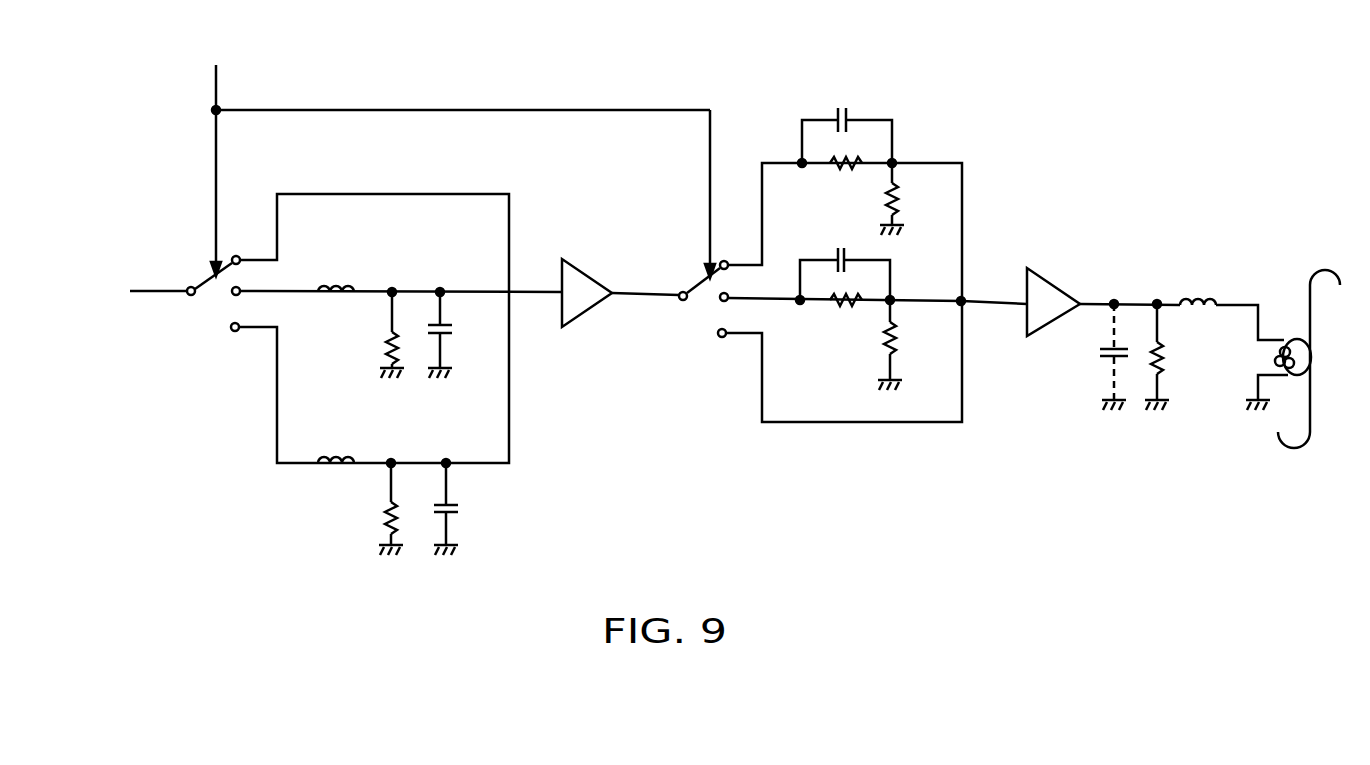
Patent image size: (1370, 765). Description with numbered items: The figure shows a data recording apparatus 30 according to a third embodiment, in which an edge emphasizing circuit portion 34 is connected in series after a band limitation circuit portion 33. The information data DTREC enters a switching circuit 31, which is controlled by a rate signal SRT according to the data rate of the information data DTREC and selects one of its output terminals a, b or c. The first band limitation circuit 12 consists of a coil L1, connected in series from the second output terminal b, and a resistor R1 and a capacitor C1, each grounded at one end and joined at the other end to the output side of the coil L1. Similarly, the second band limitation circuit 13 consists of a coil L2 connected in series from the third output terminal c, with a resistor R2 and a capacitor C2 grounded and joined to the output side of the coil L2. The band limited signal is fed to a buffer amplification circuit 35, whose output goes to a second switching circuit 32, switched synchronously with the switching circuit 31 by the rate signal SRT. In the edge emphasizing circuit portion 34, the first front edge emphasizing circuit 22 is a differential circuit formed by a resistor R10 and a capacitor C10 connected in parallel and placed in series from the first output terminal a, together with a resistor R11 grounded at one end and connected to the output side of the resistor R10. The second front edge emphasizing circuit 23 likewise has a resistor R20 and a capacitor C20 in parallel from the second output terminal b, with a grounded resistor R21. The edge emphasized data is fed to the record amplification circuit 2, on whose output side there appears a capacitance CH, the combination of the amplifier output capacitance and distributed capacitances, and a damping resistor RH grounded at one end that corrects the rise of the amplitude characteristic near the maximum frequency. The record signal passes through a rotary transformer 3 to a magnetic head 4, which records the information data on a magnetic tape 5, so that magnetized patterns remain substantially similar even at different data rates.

The record amplification circuit 2 is at (1048, 290).
The rotary transformer 3 is at (1200, 300).
The magnetic head 4 is at (1275, 357).
The magnetic tape 5 is at (1312, 312).
The first band limitation circuit 12 is at (378, 328).
The second band limitation circuit 13 is at (419, 510).
The first front edge emphasizing circuit 22 is at (844, 166).
The second front edge emphasizing circuit 23 is at (871, 327).
The data recording apparatus 30 is at (962, 70).
The switching circuit 31 is at (207, 326).
The switching circuit 32 is at (695, 328).
The band limitation circuit portion 33 is at (386, 399).
The edge emphasizing circuit portion 34 is at (844, 291).
The buffer amplification circuit 35 is at (573, 257).
The rate signal SRT is at (218, 108).
The information data DTREC is at (163, 290).
The coil L1 is at (342, 284).
The resistor R1 is at (387, 342).
The capacitor C1 is at (435, 358).
The coil L2 is at (348, 458).
The resistor R2 is at (389, 505).
The capacitor C2 is at (450, 508).
The resistor R10 is at (830, 163).
The capacitor C10 is at (848, 118).
The resistor R11 is at (898, 184).
The resistor R20 is at (852, 304).
The capacitor C20 is at (846, 258).
The resistor R21 is at (890, 328).
The capacitance CH is at (1106, 352).
The damping resistor RH is at (1161, 346).